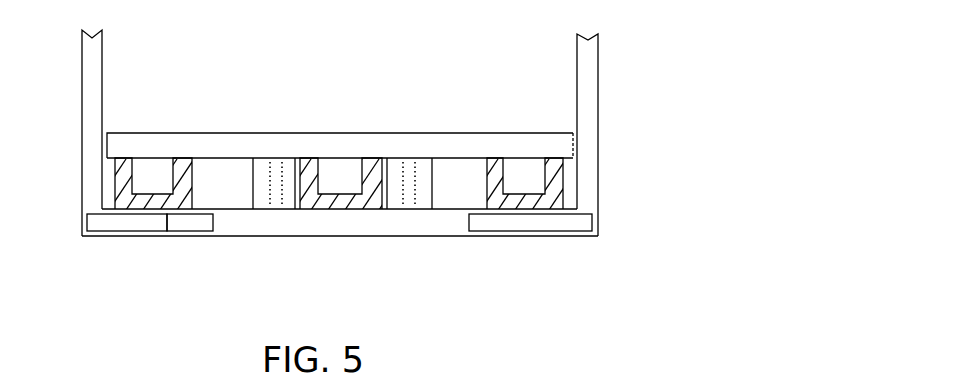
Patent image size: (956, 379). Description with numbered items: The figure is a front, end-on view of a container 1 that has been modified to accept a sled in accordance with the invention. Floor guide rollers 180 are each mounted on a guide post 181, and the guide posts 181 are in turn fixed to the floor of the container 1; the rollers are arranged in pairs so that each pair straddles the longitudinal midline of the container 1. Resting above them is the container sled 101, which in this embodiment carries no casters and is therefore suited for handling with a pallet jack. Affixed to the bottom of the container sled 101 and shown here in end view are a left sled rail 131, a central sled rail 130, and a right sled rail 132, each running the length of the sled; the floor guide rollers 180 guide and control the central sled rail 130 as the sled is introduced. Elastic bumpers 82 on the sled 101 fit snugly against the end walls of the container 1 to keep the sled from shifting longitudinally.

The container 1 is at (86, 172).
The elastic bumpers 82 is at (578, 223).
The container sled 101 is at (423, 147).
The central sled rail 130 is at (313, 209).
The left sled rail 131 is at (167, 236).
The right sled rail 132 is at (523, 209).
The floor guide rollers 180 is at (260, 209).
The guide posts 181 is at (283, 209).